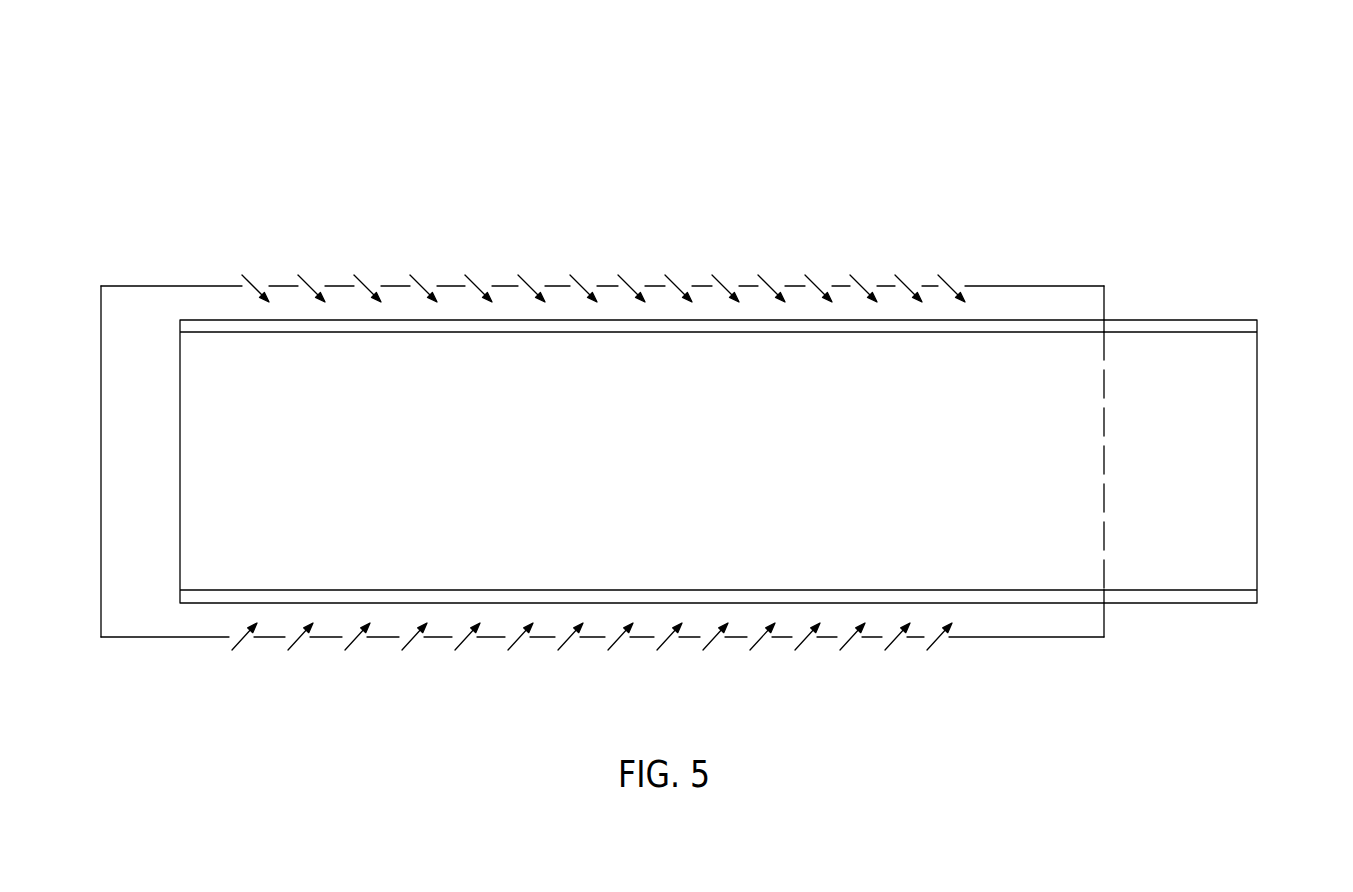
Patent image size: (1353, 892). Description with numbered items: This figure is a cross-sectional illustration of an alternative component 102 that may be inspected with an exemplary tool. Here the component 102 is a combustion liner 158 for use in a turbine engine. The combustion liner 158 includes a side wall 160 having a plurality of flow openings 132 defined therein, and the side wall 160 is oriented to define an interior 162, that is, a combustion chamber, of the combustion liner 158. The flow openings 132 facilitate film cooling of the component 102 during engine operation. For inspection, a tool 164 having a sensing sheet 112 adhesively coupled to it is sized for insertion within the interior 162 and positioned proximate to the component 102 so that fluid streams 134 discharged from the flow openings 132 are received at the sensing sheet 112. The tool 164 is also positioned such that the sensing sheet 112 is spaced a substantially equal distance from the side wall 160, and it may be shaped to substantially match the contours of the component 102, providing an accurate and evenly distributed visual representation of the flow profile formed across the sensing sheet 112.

The component 102 is at (1066, 124).
The combustion liner 158 is at (1089, 179).
The side wall 160 is at (138, 286).
The interior 162 is at (157, 468).
The sensing sheet 112 is at (1257, 320).
The tool 164 is at (1237, 485).
The flow openings 132 is at (317, 274).
The fluid streams 134 is at (251, 276).